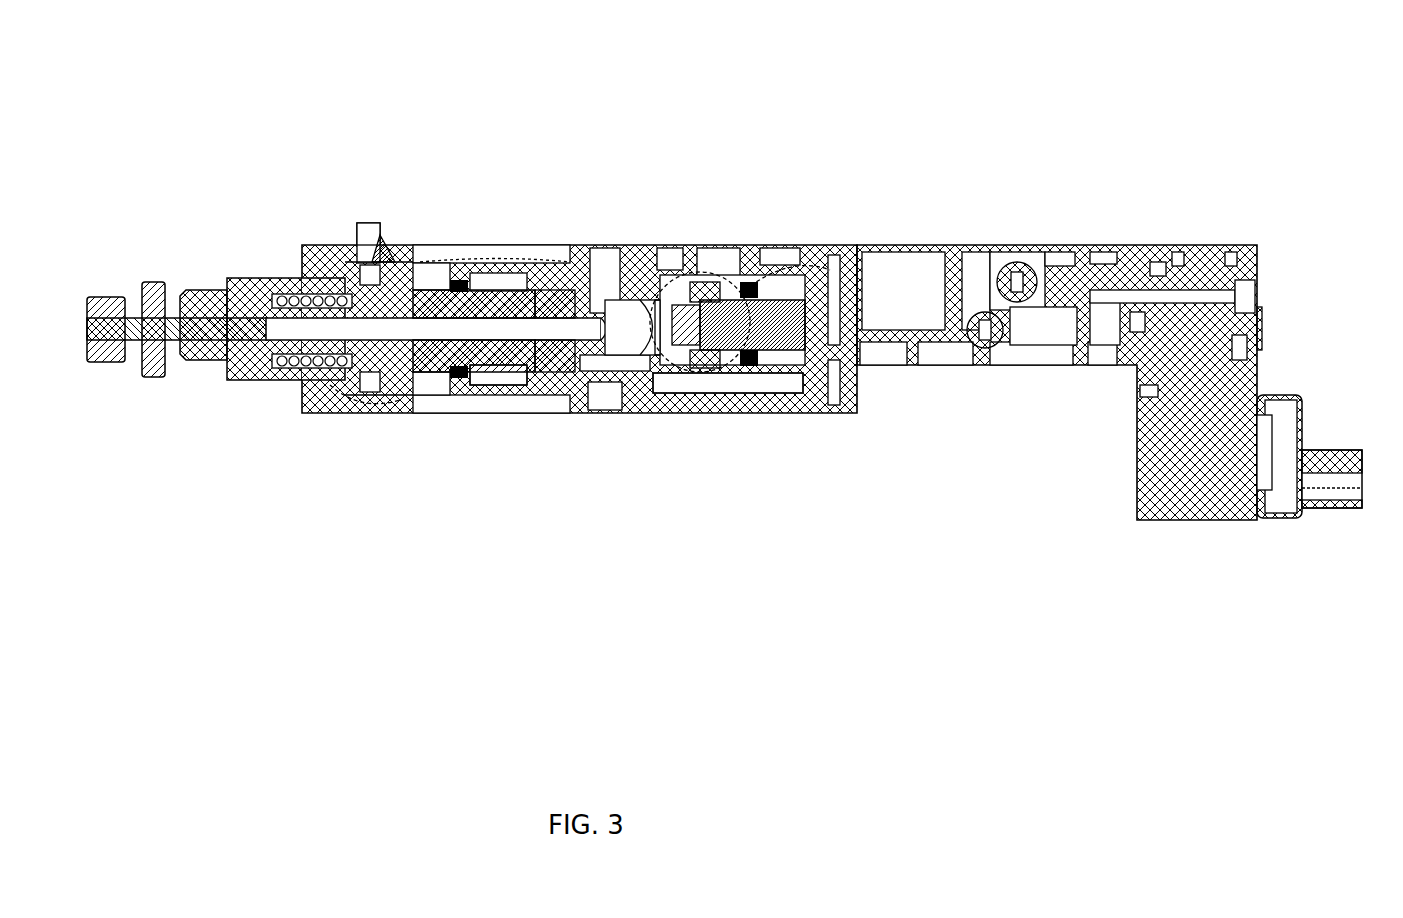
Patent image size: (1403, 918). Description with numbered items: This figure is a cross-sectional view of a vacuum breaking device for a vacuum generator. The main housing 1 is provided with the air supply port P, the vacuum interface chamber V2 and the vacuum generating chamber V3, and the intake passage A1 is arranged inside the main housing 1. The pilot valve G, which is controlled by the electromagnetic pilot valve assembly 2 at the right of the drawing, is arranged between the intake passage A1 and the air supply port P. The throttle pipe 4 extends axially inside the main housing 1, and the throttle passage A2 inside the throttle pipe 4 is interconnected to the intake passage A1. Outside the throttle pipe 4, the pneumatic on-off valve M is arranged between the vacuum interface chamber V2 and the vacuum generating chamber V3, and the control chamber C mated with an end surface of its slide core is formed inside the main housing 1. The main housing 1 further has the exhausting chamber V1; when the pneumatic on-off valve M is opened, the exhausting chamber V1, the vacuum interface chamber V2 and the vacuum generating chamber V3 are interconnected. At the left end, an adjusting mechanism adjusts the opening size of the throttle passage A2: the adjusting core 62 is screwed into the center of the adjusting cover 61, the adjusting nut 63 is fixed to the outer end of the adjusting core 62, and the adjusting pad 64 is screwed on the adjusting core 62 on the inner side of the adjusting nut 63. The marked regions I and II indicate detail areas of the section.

The main housing 1 is at (590, 405).
The electromagnetic pilot valve assembly 2 is at (1035, 250).
The throttle pipe 4 is at (533, 262).
The adjusting cover 61 is at (252, 278).
The adjusting core 62 is at (197, 290).
The adjusting nut 63 is at (91, 297).
The adjusting pad 64 is at (148, 282).
The exhausting chamber V1 is at (368, 256).
The vacuum interface chamber V2 is at (475, 250).
The vacuum generating chamber V3 is at (510, 390).
The intake passage A1 is at (650, 315).
The throttle passage A2 is at (397, 325).
The pneumatic on-off valve M is at (468, 365).
The control chamber C is at (618, 365).
The air supply port P is at (738, 360).
The pilot valve G is at (735, 345).
The detail region I is at (372, 400).
The detail region II is at (775, 270).